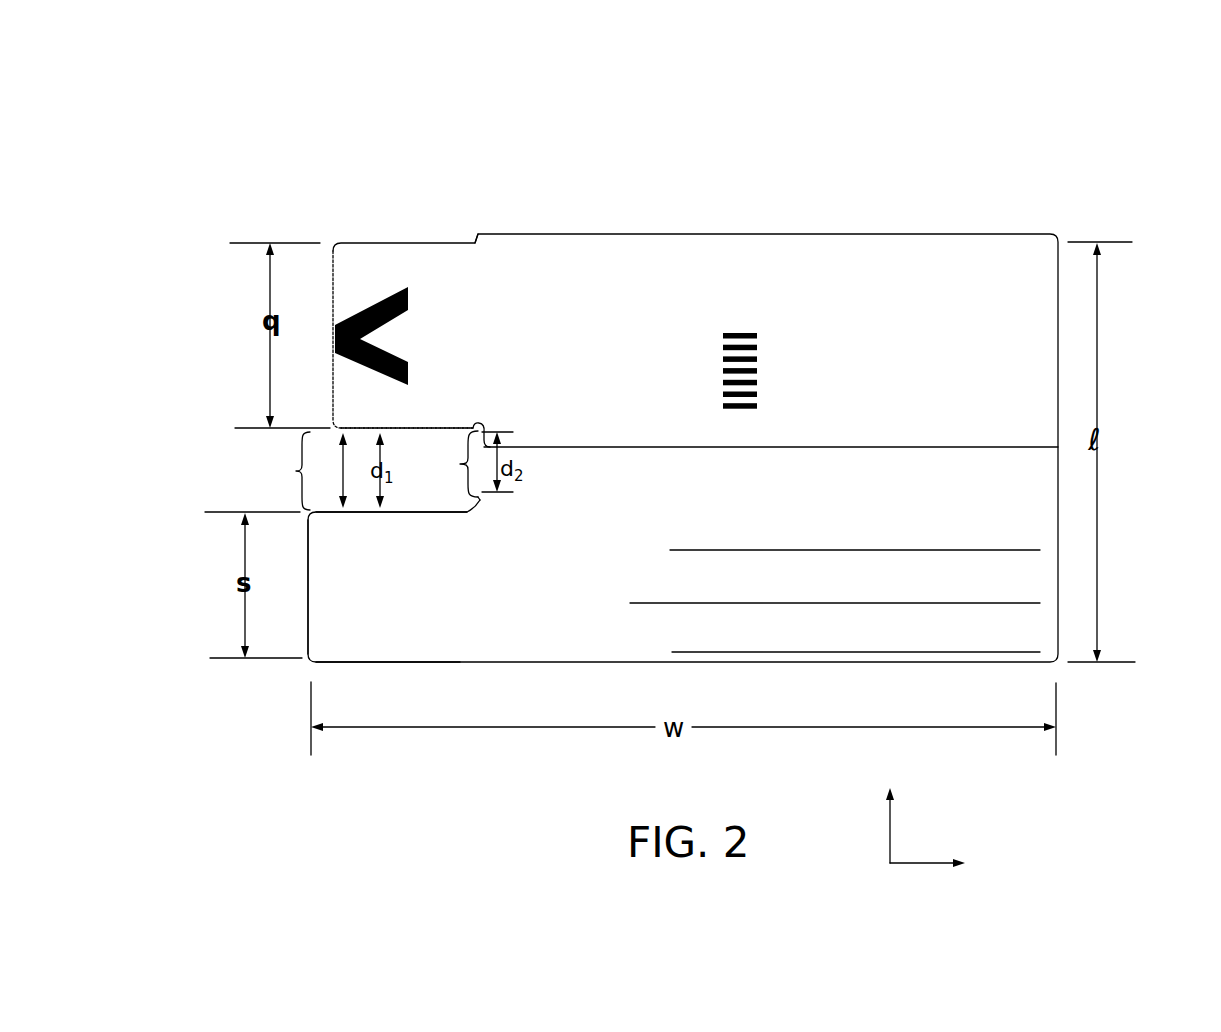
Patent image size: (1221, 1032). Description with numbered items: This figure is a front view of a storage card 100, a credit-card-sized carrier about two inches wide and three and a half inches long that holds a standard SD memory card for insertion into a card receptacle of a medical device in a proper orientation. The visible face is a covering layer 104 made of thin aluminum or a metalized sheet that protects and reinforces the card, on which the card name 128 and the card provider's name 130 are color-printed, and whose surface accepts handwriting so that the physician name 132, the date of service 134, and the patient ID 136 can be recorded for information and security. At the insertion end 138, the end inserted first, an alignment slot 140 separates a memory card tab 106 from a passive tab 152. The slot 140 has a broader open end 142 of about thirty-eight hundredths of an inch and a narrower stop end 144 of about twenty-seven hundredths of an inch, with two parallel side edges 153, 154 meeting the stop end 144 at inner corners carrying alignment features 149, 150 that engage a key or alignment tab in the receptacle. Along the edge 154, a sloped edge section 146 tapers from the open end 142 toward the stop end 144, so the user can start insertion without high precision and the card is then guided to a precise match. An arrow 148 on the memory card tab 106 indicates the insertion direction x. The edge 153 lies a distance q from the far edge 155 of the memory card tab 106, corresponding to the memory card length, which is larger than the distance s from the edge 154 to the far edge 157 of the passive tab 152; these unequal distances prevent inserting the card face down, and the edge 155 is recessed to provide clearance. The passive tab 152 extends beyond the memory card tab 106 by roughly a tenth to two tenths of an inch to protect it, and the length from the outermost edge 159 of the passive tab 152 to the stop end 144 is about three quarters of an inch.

The storage card 100 is at (972, 195).
The covering layer 104 is at (1040, 297).
The memory card tab 106 is at (358, 258).
The card name 128 is at (895, 488).
The card provider's name 130 is at (880, 300).
The physician name 132 is at (530, 541).
The date of service 134 is at (530, 596).
The patient ID 136 is at (530, 643).
The insertion end 138 is at (178, 603).
The alignment slot 140 is at (272, 471).
The open end 142 is at (339, 470).
The stop end 144 is at (441, 464).
The sloped edge section 146 is at (433, 513).
The arrow 148 is at (408, 360).
The alignment feature 149 is at (480, 500).
The alignment feature 150 is at (487, 430).
The passive tab 152 is at (372, 639).
The side edge of alignment slot 153 is at (425, 428).
The side edge of alignment slot 154 is at (365, 513).
The far edge of memory card tab 155 is at (470, 240).
The far edge of passive tab 157 is at (345, 663).
The outermost edge of passive tab 159 is at (308, 625).